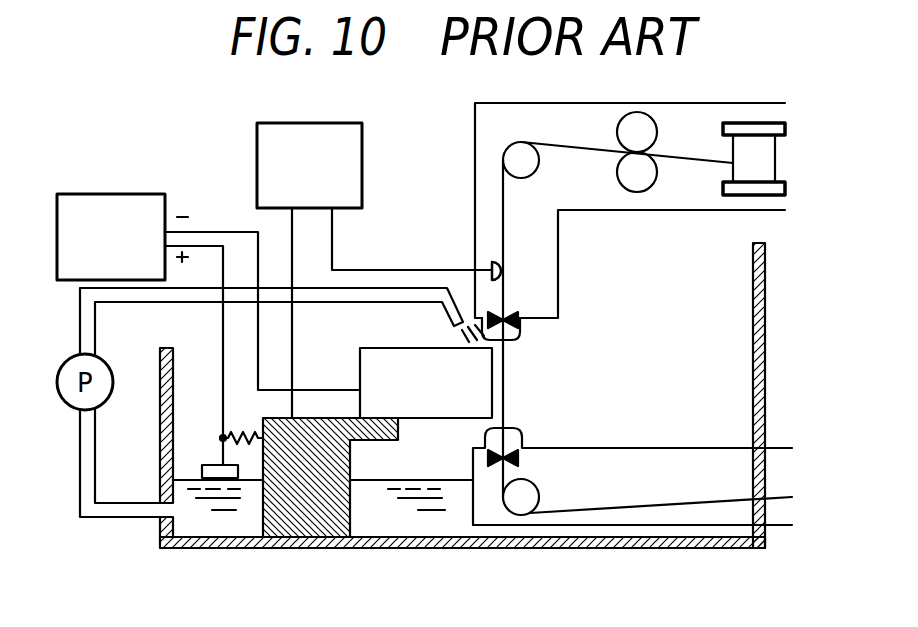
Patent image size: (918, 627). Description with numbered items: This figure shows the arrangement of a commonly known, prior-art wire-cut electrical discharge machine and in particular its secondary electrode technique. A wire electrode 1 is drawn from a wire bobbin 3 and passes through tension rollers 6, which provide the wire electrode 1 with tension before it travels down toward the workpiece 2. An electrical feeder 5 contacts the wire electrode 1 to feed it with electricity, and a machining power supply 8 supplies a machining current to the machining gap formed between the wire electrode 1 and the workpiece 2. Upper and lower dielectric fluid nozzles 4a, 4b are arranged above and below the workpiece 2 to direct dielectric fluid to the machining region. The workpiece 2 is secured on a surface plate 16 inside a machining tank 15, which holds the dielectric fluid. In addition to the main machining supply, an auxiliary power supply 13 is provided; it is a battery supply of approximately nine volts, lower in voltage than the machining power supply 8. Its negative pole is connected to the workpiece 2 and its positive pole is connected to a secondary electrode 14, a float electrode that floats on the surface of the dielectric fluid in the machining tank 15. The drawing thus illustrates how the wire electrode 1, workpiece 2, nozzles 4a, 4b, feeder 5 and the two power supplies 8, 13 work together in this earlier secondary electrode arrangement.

The wire electrode 1 is at (503, 218).
The workpiece 2 is at (360, 362).
The wire bobbin 3 is at (785, 152).
The upper dielectric fluid nozzle 4a is at (520, 336).
The lower dielectric fluid nozzle 4b is at (517, 430).
The electrical feeder 5 is at (516, 312).
The tension rollers 6 is at (617, 175).
The machining power supply 8 is at (257, 183).
The auxiliary power supply 13 is at (148, 194).
The secondary electrode 14 is at (208, 463).
The machining tank 15 is at (765, 303).
The surface plate 16 is at (320, 522).